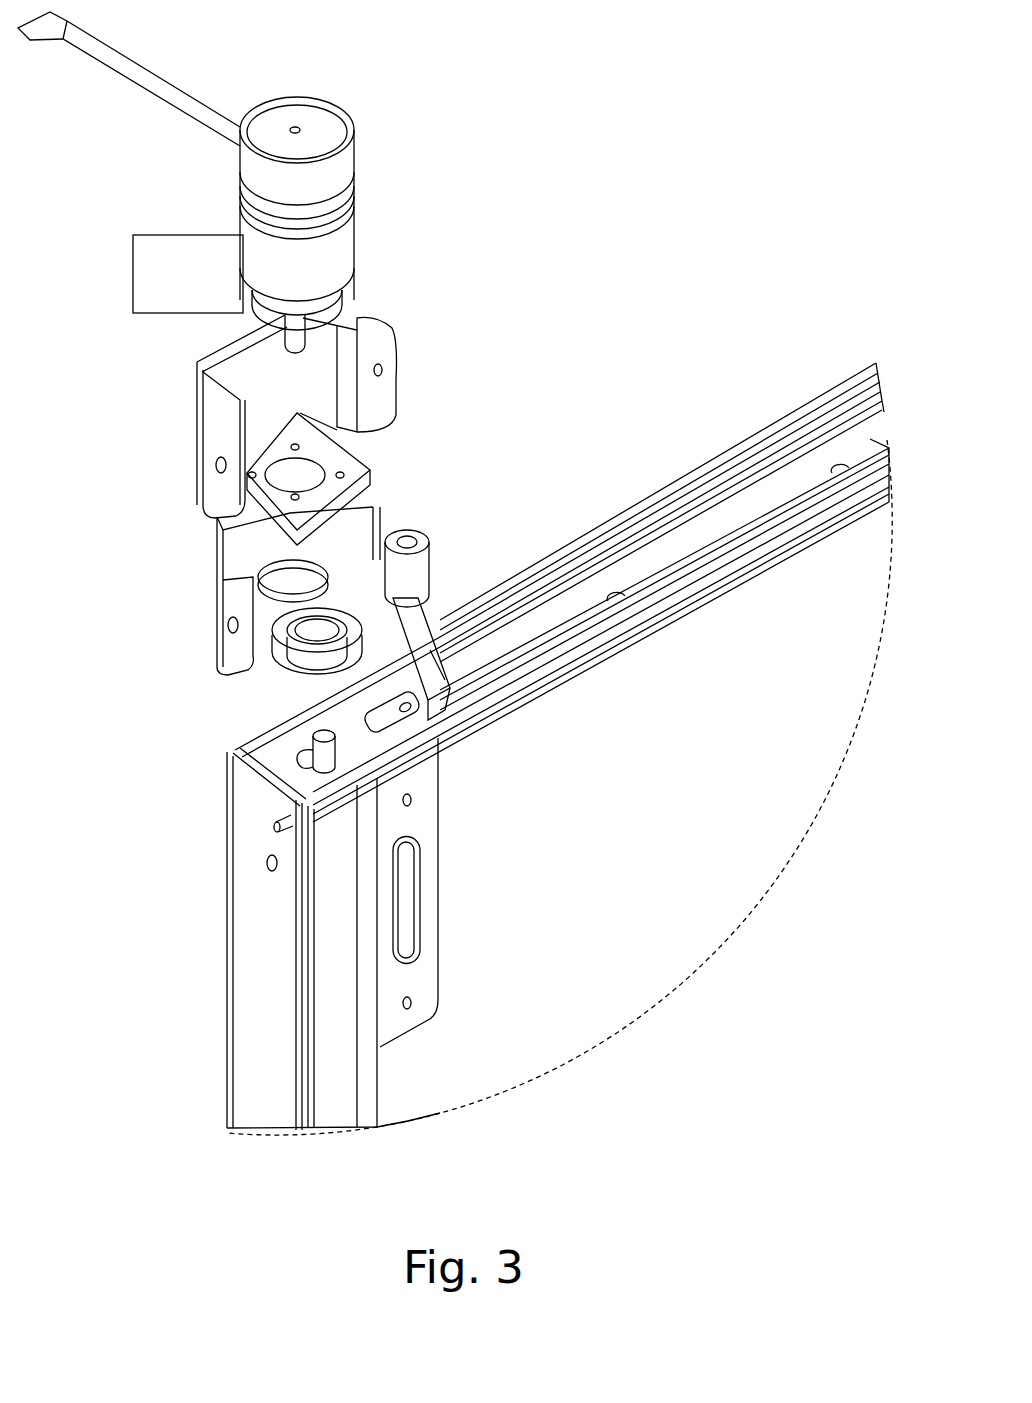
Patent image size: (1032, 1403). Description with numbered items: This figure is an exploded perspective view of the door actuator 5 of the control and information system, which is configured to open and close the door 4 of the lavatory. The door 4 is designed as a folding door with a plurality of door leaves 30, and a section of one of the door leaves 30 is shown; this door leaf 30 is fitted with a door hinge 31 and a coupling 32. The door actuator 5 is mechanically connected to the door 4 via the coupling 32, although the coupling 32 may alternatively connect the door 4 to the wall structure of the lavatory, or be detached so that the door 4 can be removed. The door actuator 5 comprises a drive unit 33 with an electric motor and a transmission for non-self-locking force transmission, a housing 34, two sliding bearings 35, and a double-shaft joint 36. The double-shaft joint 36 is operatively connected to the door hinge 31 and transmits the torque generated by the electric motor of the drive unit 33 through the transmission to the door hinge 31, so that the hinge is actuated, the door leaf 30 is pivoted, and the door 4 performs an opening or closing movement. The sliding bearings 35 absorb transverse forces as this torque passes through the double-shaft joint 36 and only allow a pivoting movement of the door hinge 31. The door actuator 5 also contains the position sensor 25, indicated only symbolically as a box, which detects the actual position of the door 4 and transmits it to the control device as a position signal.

The door 4 is at (733, 357).
The door actuator 5 is at (445, 122).
The position sensor 25 is at (212, 289).
The door leaf 30 is at (752, 685).
The door hinge 31 is at (392, 977).
The coupling 32 is at (333, 765).
The drive unit 33 is at (330, 242).
The housing 34 is at (330, 378).
The sliding bearings 35 is at (333, 622).
The double-shaft joint 36 is at (428, 690).